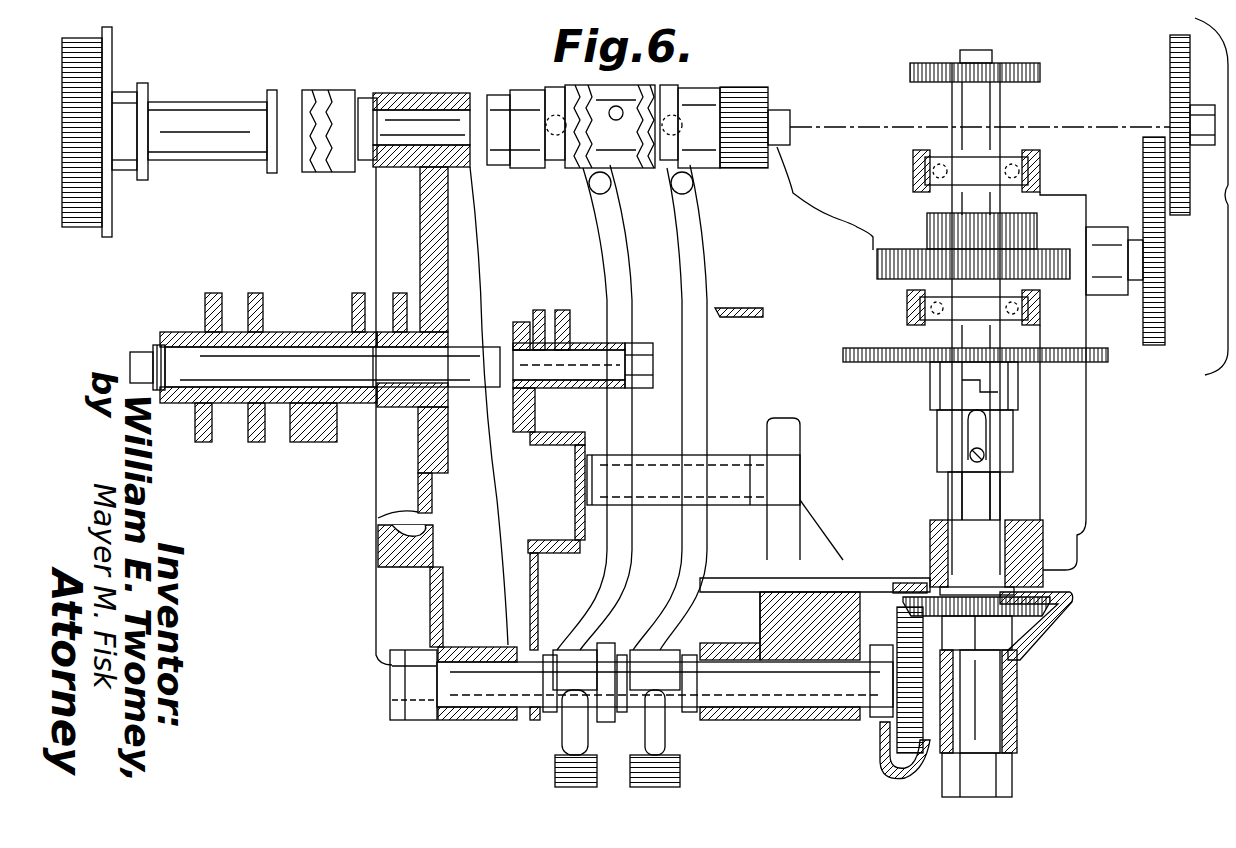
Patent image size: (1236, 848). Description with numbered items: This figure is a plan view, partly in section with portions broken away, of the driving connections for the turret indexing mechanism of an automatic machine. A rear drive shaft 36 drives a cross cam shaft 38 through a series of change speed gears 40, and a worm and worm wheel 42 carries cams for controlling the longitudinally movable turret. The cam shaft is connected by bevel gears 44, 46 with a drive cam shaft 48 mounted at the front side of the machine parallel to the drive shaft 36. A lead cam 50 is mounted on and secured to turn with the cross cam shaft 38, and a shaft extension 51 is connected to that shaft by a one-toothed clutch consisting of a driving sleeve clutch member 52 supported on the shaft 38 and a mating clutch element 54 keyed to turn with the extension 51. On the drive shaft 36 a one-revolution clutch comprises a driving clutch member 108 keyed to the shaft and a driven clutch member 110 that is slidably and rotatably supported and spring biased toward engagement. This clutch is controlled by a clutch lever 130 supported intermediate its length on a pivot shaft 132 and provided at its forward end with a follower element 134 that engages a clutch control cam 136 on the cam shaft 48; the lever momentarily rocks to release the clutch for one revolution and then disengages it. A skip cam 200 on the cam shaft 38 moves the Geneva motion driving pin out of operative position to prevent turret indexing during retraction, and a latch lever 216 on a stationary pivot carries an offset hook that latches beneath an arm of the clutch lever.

The rear drive shaft 36 is at (207, 109).
The driving clutch member 108 is at (600, 97).
The driven clutch member 110 is at (702, 98).
The clutch lever 130 is at (696, 296).
The pivot shaft 132 is at (586, 483).
The follower element 134 is at (660, 743).
The clutch control cam 136 is at (660, 775).
The latch lever 216 is at (735, 317).
The cross cam shaft 38 is at (985, 100).
The skip cam 200 is at (912, 72).
The change speed gears 40 is at (1205, 195).
The worm and worm wheel 42 is at (900, 279).
The lead cam 50 is at (880, 353).
The driving sleeve clutch member 52 is at (935, 378).
The mating clutch element 54 is at (943, 402).
The shaft extension 51 is at (962, 496).
The bevel gear 44 is at (1040, 610).
The bevel gear 46 is at (900, 738).
The drive cam shaft 48 is at (812, 683).